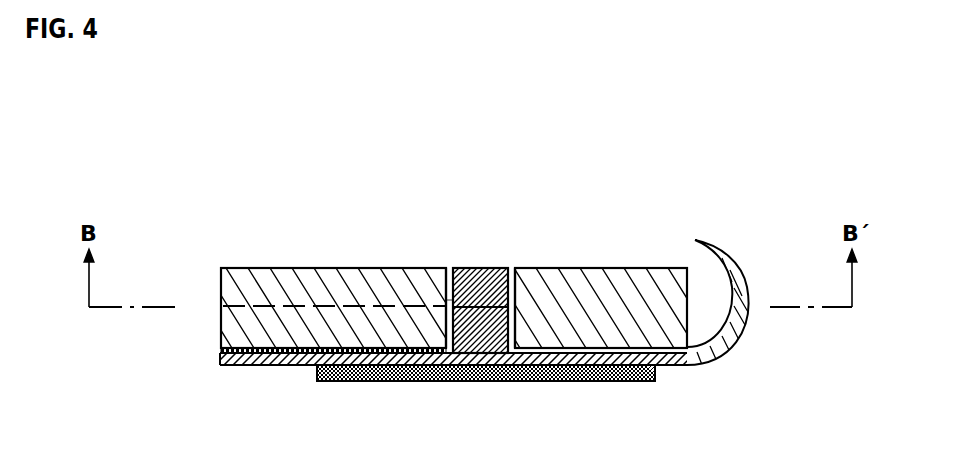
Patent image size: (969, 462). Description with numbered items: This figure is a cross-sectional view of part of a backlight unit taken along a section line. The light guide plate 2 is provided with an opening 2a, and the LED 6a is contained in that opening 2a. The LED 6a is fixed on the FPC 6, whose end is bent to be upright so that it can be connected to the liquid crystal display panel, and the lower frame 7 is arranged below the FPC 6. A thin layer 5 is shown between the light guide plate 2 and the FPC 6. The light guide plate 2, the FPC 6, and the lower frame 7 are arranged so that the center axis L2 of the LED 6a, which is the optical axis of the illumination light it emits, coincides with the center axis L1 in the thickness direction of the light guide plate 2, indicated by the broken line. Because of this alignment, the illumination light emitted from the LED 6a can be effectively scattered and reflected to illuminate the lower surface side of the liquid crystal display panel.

The center axis in the thickness direction of the light guide plate L1 is at (263, 306).
The light guide plate 2 is at (360, 268).
The opening 2a is at (450, 268).
The center axis of the LED L2 is at (456, 268).
The LED 6a is at (492, 270).
The adhesive layer 5 is at (263, 366).
The FPC 6 is at (292, 362).
The lower frame 7 is at (367, 381).